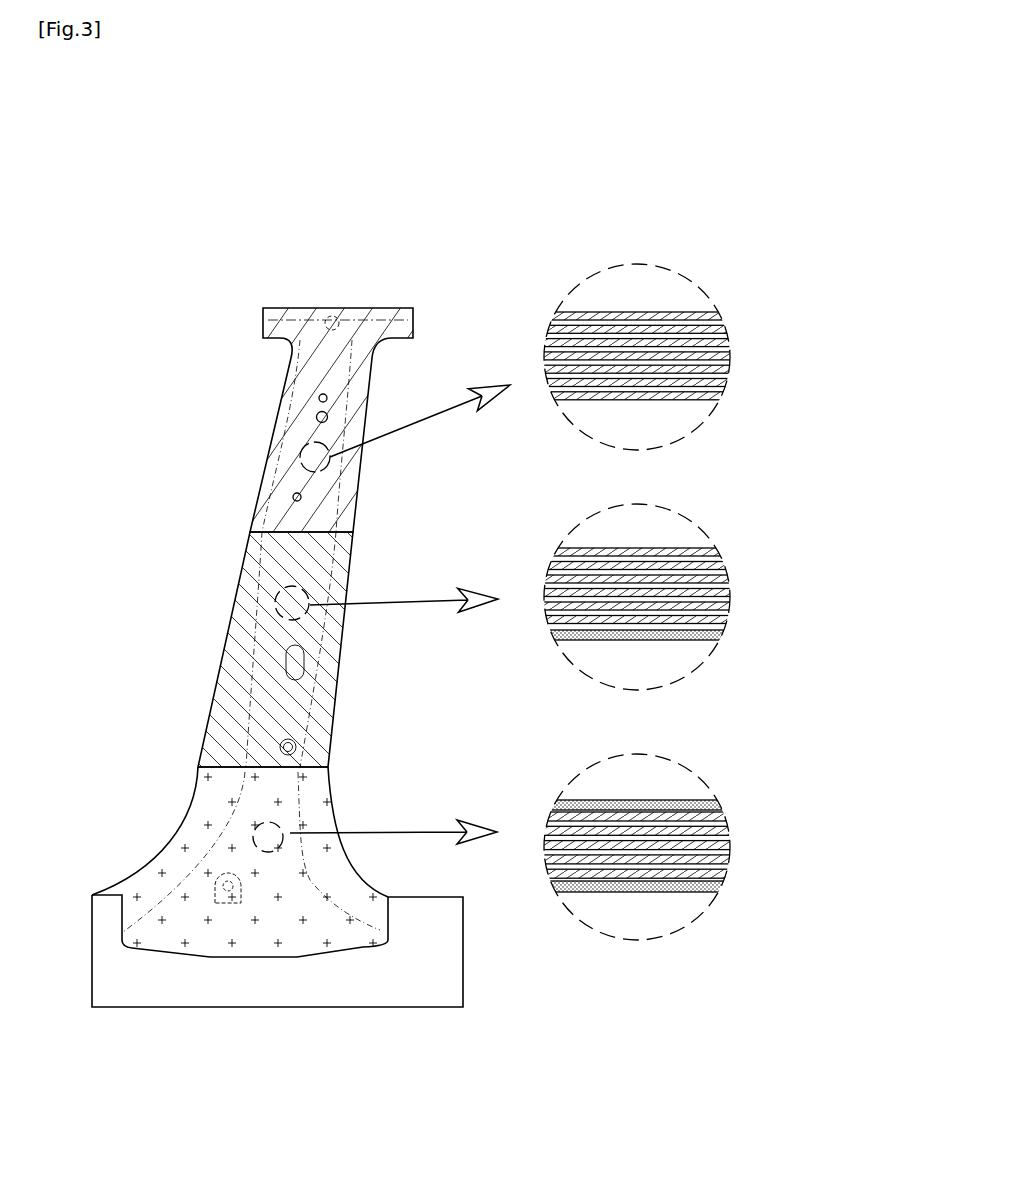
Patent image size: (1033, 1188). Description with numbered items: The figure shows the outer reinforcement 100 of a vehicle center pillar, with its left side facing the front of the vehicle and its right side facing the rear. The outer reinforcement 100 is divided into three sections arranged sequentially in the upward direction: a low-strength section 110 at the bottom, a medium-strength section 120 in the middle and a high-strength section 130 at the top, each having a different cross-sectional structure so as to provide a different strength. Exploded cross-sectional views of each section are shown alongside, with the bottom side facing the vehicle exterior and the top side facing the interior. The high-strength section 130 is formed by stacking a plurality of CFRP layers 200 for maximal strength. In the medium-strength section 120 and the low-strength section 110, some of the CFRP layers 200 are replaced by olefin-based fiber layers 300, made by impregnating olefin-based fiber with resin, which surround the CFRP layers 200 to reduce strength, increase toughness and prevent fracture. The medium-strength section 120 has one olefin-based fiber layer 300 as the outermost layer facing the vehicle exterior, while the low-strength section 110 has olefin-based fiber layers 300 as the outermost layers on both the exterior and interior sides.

The outer reinforcement 100 is at (180, 540).
The low-strength section 110 is at (187, 840).
The medium-strength section 120 is at (233, 653).
The high-strength section 130 is at (297, 412).
The CFRP layers 200 is at (722, 398).
The olefin-based fiber layers 300 is at (695, 637).